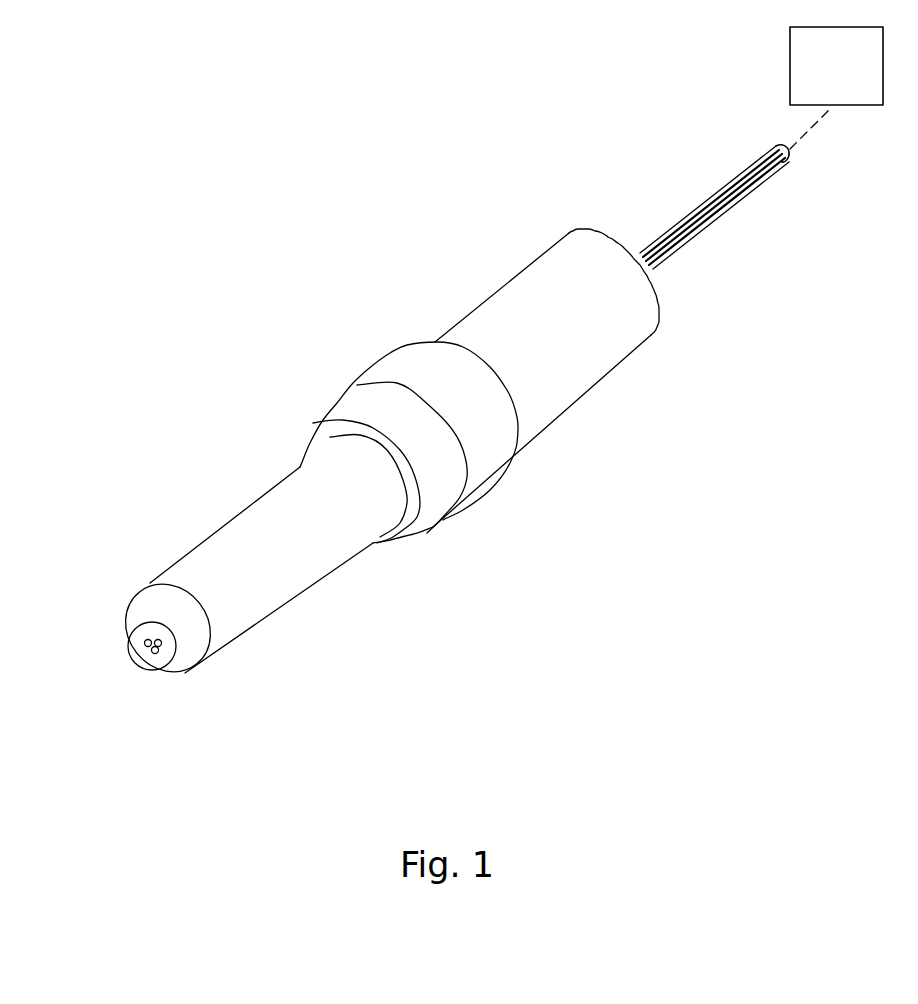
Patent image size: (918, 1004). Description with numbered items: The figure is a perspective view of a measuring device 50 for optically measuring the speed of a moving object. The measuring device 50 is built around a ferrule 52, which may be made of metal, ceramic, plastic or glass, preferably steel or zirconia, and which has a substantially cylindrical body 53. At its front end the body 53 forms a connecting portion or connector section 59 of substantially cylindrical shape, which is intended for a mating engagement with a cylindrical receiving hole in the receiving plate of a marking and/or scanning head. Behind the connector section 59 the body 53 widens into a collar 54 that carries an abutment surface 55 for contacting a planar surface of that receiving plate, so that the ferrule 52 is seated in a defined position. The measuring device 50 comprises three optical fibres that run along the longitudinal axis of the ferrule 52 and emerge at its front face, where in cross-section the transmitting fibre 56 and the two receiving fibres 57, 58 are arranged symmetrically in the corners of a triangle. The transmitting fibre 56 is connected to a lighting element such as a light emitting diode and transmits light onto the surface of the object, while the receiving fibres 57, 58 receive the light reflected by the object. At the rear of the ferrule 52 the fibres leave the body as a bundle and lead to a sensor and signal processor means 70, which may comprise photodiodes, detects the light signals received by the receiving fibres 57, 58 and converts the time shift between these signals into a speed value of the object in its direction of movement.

The measuring device 50 is at (462, 236).
The ferrule 52 is at (550, 382).
The body 53 is at (293, 577).
The collar 54 is at (485, 452).
The abutment surface 55 is at (400, 523).
The transmitting fibre 56 is at (160, 642).
The receiving fibre 57 is at (147, 643).
The receiving fibre 58 is at (167, 652).
The connector section 59 is at (283, 482).
The sensor and signal processor means 70 is at (848, 78).